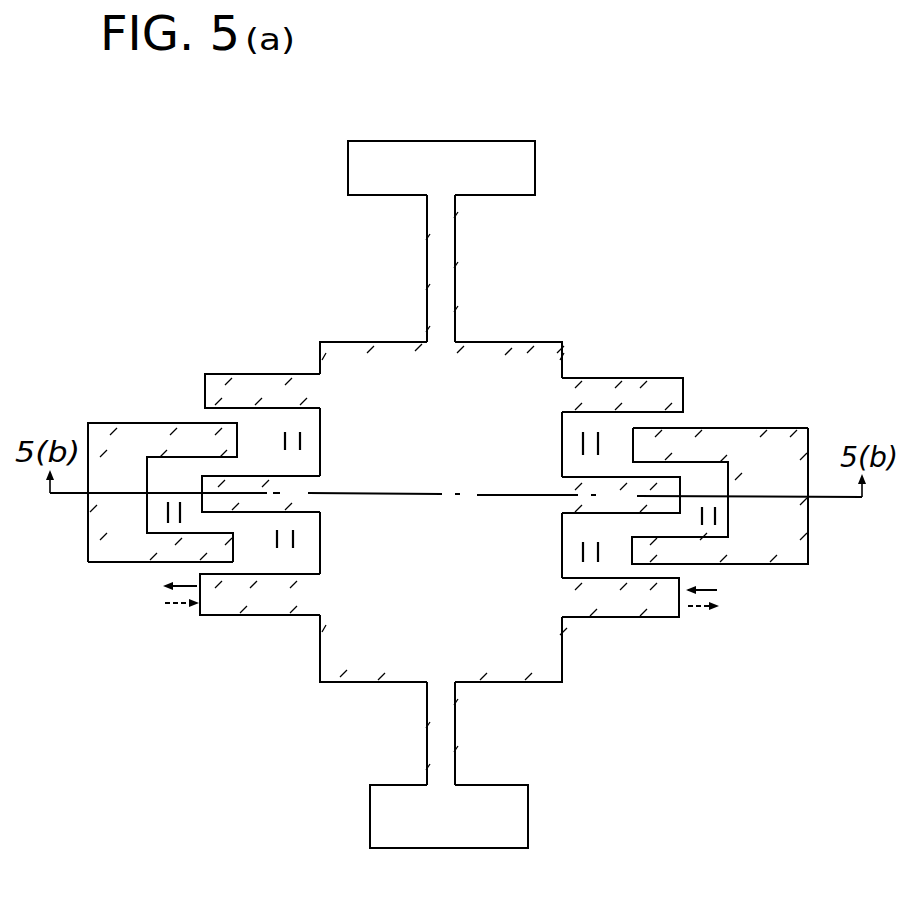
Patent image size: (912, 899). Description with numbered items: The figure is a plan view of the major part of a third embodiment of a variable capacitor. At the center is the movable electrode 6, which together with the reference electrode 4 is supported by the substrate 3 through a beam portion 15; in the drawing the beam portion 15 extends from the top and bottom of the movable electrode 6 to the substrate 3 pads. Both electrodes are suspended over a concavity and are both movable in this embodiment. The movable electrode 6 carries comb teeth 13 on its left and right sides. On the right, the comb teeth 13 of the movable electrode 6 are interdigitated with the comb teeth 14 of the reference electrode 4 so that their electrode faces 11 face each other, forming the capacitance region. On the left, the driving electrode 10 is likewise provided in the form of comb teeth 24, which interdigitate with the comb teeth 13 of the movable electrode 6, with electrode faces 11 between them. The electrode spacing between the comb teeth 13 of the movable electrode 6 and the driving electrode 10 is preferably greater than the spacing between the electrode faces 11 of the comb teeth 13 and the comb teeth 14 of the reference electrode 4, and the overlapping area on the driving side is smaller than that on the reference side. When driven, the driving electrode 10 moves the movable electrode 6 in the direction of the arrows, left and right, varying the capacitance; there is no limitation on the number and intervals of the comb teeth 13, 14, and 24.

The substrate 3 is at (533, 168).
The beam portion 15 is at (453, 275).
The movable electrode 6 is at (533, 347).
The comb teeth 13 is at (227, 383).
The electrode faces 11 is at (275, 432).
The comb teeth 24 is at (167, 433).
The driving electrode 10 is at (142, 562).
The reference electrode 4 is at (780, 427).
The comb teeth 14 is at (728, 437).